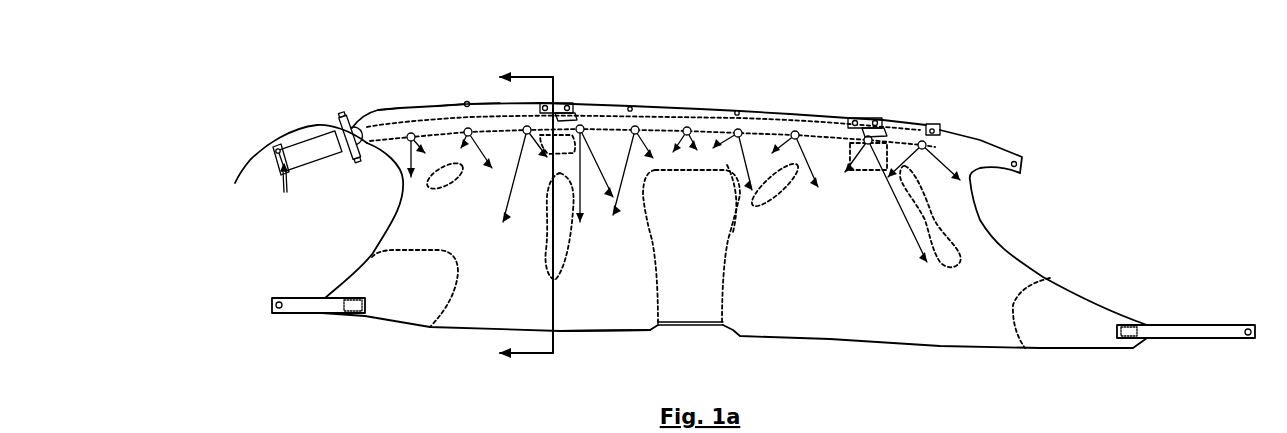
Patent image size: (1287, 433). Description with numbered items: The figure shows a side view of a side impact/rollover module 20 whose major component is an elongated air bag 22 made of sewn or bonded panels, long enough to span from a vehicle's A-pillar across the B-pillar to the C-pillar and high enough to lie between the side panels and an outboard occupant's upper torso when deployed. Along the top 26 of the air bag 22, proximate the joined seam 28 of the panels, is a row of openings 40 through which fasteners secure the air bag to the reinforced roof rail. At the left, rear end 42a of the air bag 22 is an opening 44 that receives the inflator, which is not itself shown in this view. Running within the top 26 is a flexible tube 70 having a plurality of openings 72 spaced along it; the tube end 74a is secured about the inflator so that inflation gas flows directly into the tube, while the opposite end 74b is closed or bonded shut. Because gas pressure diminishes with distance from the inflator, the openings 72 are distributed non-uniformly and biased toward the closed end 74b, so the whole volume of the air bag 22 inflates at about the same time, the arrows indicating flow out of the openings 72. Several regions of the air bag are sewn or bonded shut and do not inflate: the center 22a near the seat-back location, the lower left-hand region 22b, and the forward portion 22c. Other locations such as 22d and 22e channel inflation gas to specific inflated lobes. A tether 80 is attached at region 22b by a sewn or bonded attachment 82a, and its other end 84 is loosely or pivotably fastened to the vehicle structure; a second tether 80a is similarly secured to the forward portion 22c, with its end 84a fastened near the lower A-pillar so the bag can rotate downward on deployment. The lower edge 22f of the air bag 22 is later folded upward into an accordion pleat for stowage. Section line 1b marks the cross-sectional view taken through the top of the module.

The side impact/rollover module 20 is at (693, 108).
The air bag 22 is at (952, 212).
The center of the air bag 22a is at (693, 298).
The lower left-hand region of the air bag 22b is at (372, 280).
The forward portion of the air bag 22c is at (1058, 310).
The channeling location 22d is at (542, 268).
The channeling location 22e is at (938, 270).
The lower edge of the air bag 22f is at (610, 318).
The top of the air bag 26 is at (556, 100).
The joined seam 28 is at (463, 102).
The openings 40 is at (462, 102).
The left, rear end of air bag 42a is at (392, 110).
The opening 44 is at (347, 128).
The flexible tube 70 is at (769, 124).
The openings 72 is at (407, 139).
The end of the tube 74a is at (278, 163).
The end of the tube 74b is at (930, 128).
The tether 80 is at (290, 308).
The second tether 80a is at (1165, 332).
The strap attachment patch 82a is at (343, 313).
The end of tether 84 is at (281, 299).
The end of tether 84a is at (1242, 342).
The section line 1b- 1b is at (801, 215).